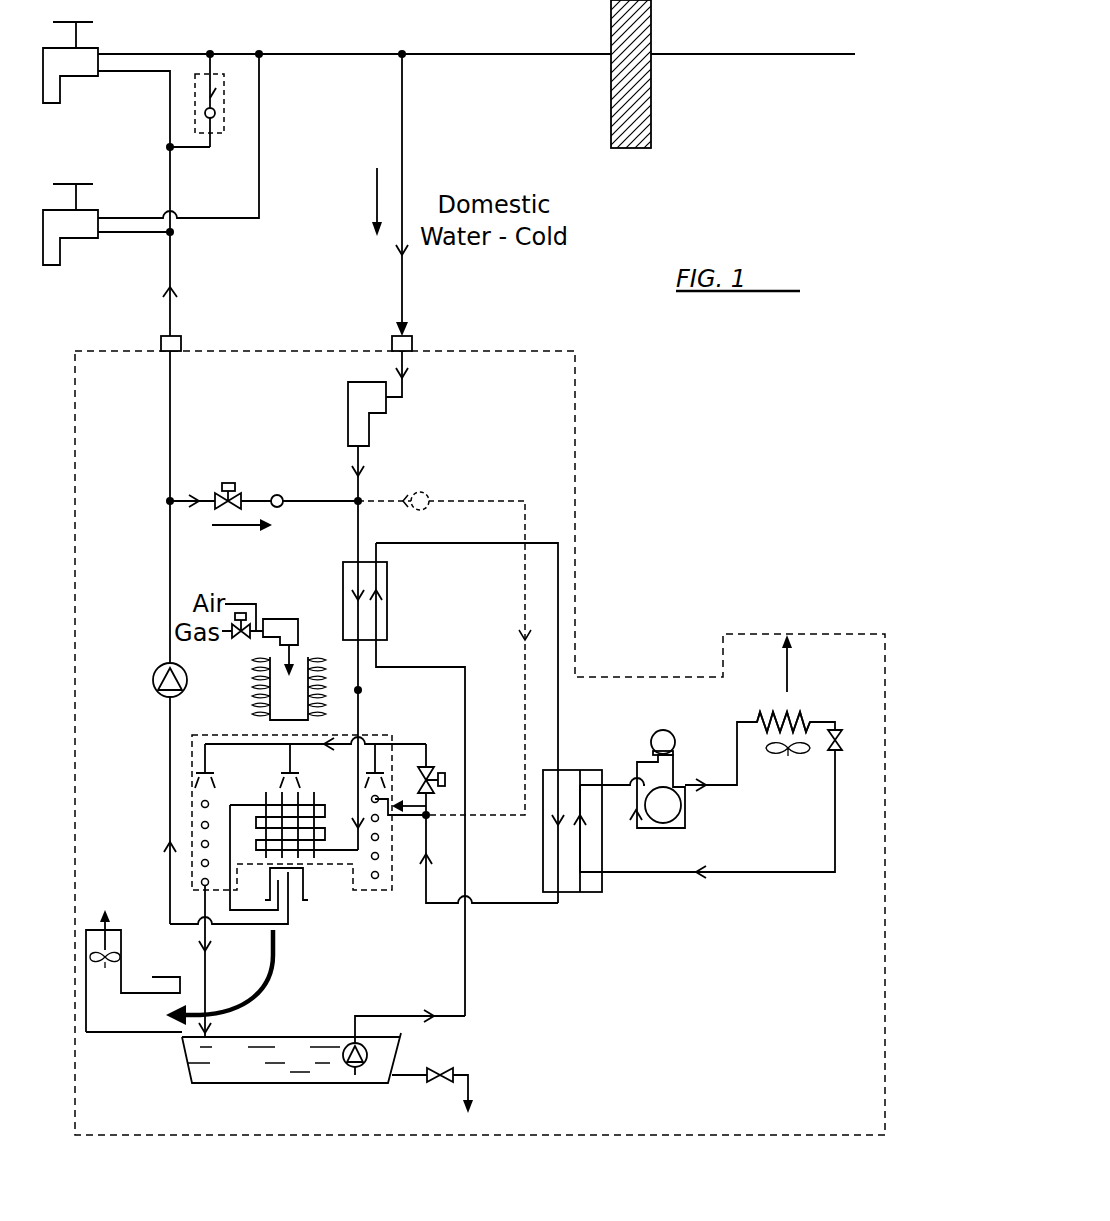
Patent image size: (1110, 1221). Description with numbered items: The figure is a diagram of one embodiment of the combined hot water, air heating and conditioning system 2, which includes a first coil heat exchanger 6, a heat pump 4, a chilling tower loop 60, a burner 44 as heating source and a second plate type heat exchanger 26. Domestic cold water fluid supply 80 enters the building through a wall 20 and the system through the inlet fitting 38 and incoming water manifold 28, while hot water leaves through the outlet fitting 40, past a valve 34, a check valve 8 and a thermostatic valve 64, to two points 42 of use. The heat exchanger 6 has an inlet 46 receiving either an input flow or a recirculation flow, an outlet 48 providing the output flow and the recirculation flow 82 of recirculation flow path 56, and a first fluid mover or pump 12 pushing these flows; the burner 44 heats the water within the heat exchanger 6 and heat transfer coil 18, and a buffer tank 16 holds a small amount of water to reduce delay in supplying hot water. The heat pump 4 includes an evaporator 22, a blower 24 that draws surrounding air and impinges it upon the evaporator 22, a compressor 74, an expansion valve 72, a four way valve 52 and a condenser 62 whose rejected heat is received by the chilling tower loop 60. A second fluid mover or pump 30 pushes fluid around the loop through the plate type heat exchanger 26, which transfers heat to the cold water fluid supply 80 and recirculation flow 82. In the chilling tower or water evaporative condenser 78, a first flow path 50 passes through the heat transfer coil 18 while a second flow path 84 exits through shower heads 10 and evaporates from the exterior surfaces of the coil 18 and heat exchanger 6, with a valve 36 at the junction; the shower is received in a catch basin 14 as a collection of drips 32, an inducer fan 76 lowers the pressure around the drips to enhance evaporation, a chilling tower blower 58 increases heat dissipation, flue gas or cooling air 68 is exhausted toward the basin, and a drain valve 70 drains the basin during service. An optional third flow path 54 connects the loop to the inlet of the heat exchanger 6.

The combined hot water, air heating and conditioning system 2 is at (75, 434).
The heat pump 4 is at (732, 746).
The coil heat exchanger 6 is at (320, 805).
The check valve 8 is at (279, 495).
The shower head 10 is at (200, 770).
The fluid mover or pump 12 is at (153, 680).
The catch basin 14 is at (186, 1056).
The buffer tank 16 is at (303, 880).
The heat transfer coil 18 is at (200, 805).
The wall 20 is at (611, 78).
The evaporator 22 is at (812, 716).
The blower 24 is at (790, 756).
The plate type heat exchanger 26 is at (343, 570).
The incoming water manifold 28 is at (386, 404).
The fluid mover or pump 30 is at (345, 1062).
The collection of drips 32 is at (302, 1036).
The valve 34 is at (228, 483).
The valve 36 is at (426, 766).
The inlet fitting 38 is at (412, 341).
The outlet fitting 40 is at (161, 343).
The point of use 42 is at (62, 86).
The burner 44 is at (270, 660).
The inlet 46 is at (358, 690).
The outlet 48 is at (170, 501).
The first flow path 50 is at (426, 835).
The four way valve 52 is at (663, 823).
The third flow path 54 is at (460, 501).
The recirculation flow path 56 is at (328, 500).
The chilling tower blower 58 is at (290, 619).
The chilling tower loop 60 is at (380, 1016).
The condenser 62 is at (600, 890).
The thermostatic valve 64 is at (209, 73).
The flue gas or cooling air 68 is at (276, 940).
The drain valve 70 is at (446, 1074).
The expansion valve 72 is at (840, 745).
The compressor 74 is at (676, 745).
The inducer fan 76 is at (121, 958).
The chilling tower or water evaporative condenser 78 is at (192, 880).
The fluid supply 80 is at (375, 190).
The recirculation flow 82 is at (242, 530).
The second flow path 84 is at (412, 744).